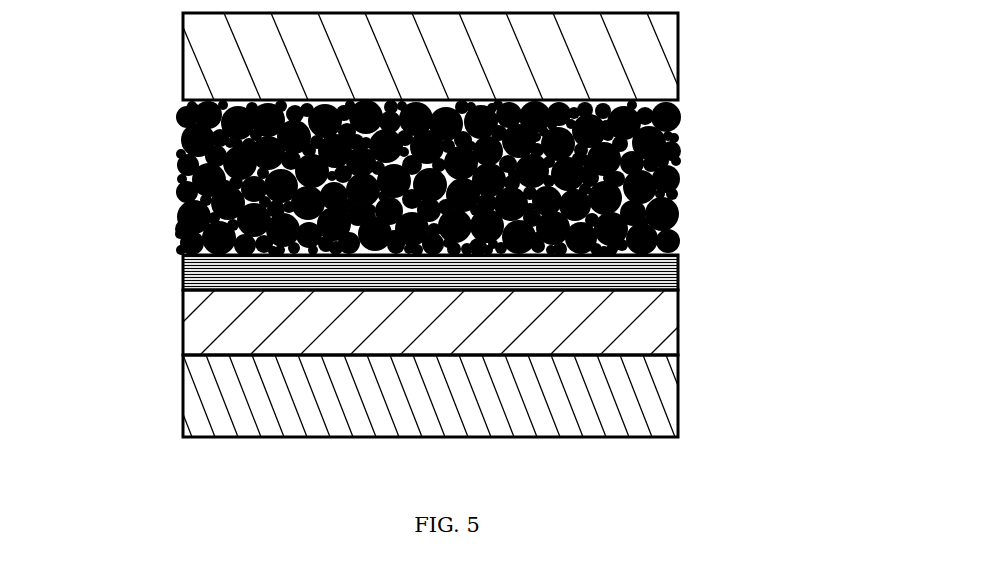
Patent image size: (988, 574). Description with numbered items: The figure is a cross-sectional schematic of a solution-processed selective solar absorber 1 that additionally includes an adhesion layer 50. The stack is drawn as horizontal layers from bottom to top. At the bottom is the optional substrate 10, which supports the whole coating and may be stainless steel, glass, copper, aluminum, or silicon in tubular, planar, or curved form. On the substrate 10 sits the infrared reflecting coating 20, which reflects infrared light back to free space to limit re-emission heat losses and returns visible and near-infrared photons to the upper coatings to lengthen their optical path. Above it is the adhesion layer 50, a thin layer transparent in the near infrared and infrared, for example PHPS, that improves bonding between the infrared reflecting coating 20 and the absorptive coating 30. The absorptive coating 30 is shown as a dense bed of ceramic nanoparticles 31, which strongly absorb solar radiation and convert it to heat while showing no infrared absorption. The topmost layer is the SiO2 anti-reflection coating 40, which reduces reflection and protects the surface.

The selective solar absorber 1 is at (85, 13).
The substrate 10 is at (678, 393).
The infrared reflecting coating 20 is at (678, 305).
The absorptive coating 30 is at (434, 178).
The ceramic nanoparticles 31 is at (178, 229).
The SiO2 anti-reflection coating 40 is at (678, 55).
The adhesion layer 50 is at (680, 272).